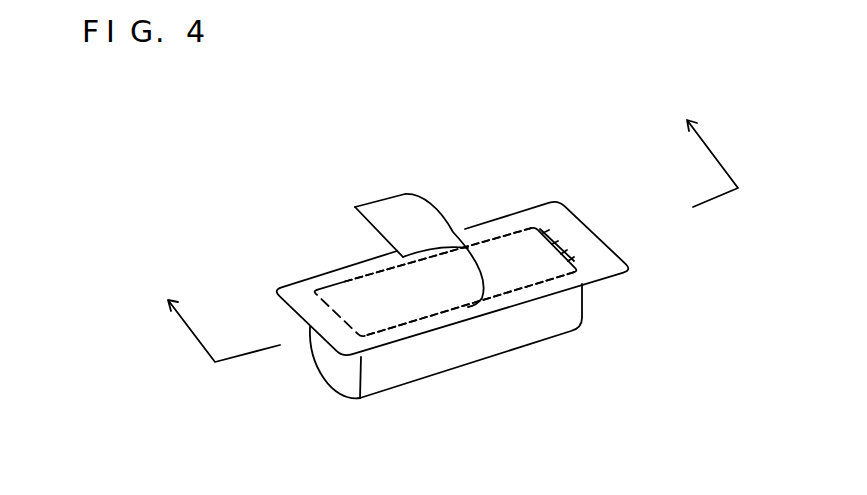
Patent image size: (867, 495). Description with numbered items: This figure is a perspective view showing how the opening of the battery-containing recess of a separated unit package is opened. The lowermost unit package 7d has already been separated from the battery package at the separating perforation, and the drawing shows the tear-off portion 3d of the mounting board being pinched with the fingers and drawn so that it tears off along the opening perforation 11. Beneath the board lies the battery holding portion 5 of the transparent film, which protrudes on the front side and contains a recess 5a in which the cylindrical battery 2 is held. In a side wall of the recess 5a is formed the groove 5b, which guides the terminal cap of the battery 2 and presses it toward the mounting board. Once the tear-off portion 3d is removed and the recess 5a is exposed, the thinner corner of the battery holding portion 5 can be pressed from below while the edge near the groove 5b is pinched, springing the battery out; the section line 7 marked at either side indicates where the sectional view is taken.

The cylindrical battery 2 is at (510, 272).
The tear-off portion 3d is at (402, 212).
The battery holding portion 5 is at (388, 367).
The recess 5a is at (523, 229).
The groove 5b is at (572, 250).
The lowermost unit package 7d is at (568, 210).
The opening perforation 11 is at (347, 280).
The section line VII-VII 7 is at (475, 263).